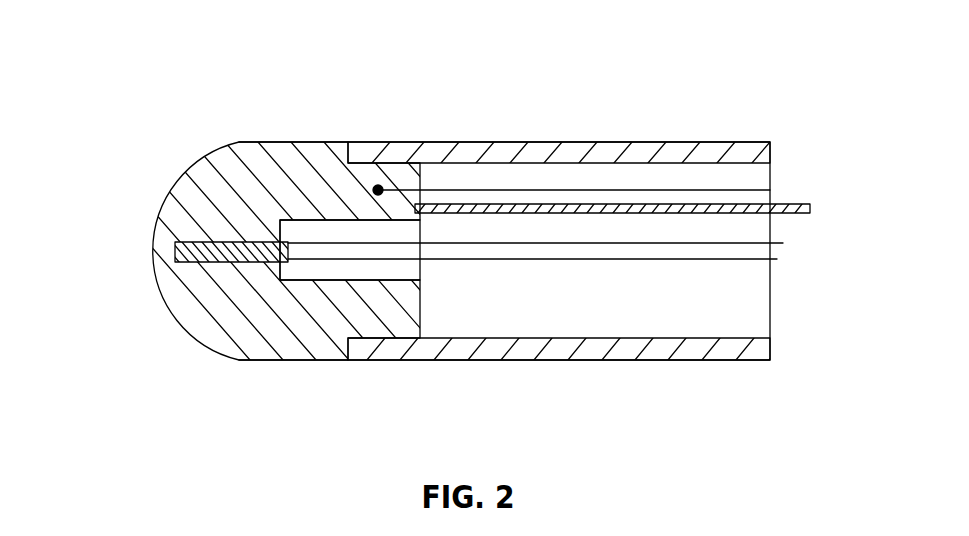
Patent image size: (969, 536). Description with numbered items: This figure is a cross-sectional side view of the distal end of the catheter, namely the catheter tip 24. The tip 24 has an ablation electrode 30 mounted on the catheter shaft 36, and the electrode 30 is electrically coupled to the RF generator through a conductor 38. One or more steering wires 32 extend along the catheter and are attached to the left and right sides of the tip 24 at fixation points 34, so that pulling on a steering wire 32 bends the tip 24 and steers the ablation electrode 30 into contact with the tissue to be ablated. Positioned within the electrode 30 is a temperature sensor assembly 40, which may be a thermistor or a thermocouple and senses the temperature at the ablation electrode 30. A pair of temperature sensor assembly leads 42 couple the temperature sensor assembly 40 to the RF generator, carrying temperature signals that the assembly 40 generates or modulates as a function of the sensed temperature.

The catheter tip 24 is at (766, 92).
The ablation electrode 30 is at (207, 343).
The steering wire 32 is at (593, 192).
The fixation point 34 is at (381, 188).
The catheter shaft 36 is at (490, 351).
The conductor 38 is at (802, 215).
The temperature sensor assembly 40 is at (173, 243).
The temperature sensor assembly leads 42 is at (547, 258).